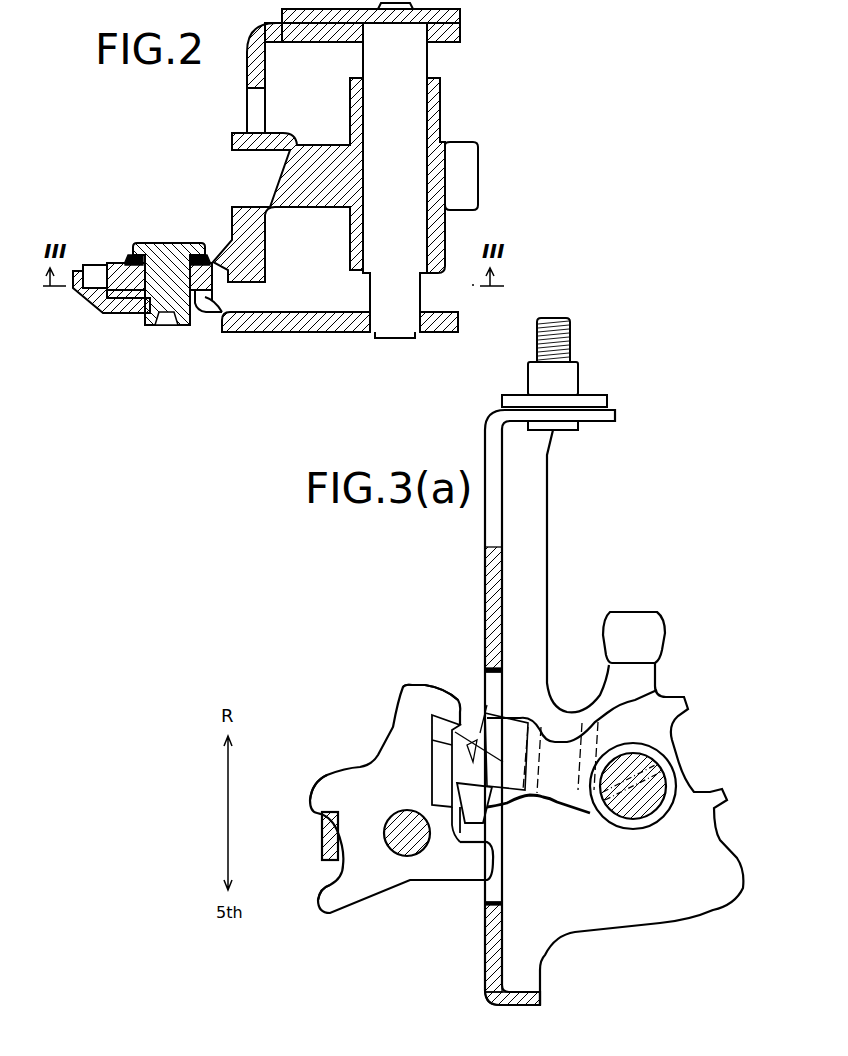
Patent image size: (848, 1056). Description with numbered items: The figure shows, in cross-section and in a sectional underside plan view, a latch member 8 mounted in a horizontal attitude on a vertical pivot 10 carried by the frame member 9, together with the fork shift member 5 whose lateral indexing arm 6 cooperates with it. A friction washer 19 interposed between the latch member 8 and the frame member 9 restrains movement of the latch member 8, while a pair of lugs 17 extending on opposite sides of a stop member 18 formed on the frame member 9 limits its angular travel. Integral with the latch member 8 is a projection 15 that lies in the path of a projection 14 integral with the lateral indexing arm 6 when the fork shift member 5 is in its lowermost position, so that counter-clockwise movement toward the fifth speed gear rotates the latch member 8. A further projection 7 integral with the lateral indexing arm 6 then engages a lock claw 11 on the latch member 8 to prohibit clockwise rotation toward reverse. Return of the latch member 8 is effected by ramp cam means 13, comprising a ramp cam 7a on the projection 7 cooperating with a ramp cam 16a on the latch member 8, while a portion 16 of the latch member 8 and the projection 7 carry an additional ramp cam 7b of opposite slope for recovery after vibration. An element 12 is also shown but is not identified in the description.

In FIG. 2, the fork shift member 5 is at (446, 100).
In FIG. 3A, the fork shift member 5 is at (600, 832).
In FIG. 2, the lateral indexing arm 6 is at (310, 208).
In FIG. 3A, the lateral indexing arm 6 is at (543, 788).
In FIG. 2, the projection 7 is at (252, 258).
In FIG. 3A, the projection 7 is at (490, 723).
In FIG. 2, the ramp cam 7a is at (238, 235).
In FIG. 2, the ramp cam 7b is at (229, 290).
In FIG. 3A, the ramp cam 7b is at (455, 742).
In FIG. 2, the latch member 8 is at (118, 263).
In FIG. 3A, the latch member 8 is at (372, 895).
In FIG. 2, the frame member 9 is at (331, 332).
In FIG. 3A, the frame member 9 is at (486, 573).
In FIG. 2, the vertical pivot 10 is at (165, 243).
In FIG. 3A, the vertical pivot 10 is at (408, 858).
In FIG. 2, the lock claw 11 is at (229, 333).
In FIG. 3A, the lock claw 11 is at (452, 700).
In FIG. 3A, the spring end portion 12 is at (455, 835).
In FIG. 3A, the ramp cam means 13 is at (487, 705).
In FIG. 3A, the projection 14 is at (490, 818).
In FIG. 3A, the projection 15 is at (477, 874).
In FIG. 2, the portion 16 is at (200, 262).
In FIG. 3A, the portion 16 is at (450, 788).
In FIG. 2, the ramp cam 16a is at (210, 305).
In FIG. 3A, the ramp cam 16a is at (435, 755).
In FIG. 2, the lugs 17 is at (95, 266).
In FIG. 3A, the lugs 17 is at (317, 796).
In FIG. 2, the stop member 18 is at (78, 290).
In FIG. 3A, the stop member 18 is at (321, 840).
In FIG. 2, the friction washer 19 is at (127, 299).